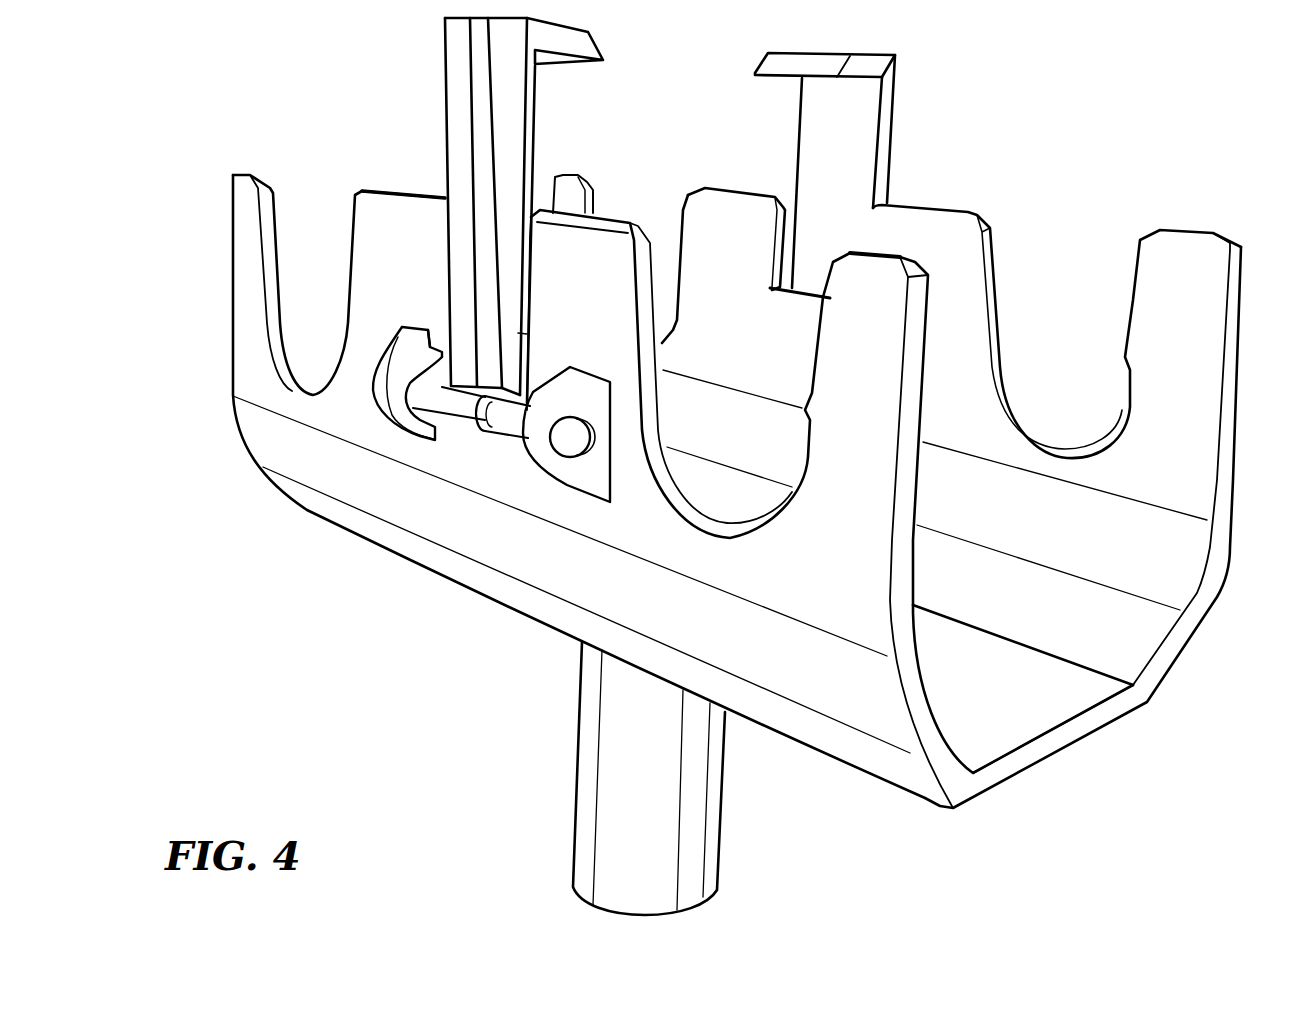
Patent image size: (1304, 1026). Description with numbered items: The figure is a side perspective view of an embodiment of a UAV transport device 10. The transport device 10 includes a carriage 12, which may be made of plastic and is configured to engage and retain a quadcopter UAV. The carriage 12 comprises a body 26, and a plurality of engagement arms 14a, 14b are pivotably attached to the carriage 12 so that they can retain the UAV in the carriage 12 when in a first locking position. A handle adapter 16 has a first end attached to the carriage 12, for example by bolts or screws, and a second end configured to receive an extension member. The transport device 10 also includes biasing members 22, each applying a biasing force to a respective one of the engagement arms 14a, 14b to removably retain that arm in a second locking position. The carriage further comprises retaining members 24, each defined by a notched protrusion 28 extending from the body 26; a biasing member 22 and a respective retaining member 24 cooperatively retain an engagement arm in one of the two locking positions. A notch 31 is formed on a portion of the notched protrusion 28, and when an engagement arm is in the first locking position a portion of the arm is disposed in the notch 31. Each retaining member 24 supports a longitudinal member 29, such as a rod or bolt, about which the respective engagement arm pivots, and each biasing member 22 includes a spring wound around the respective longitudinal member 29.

The transport device 10 is at (247, 673).
The carriage 12 is at (846, 792).
The engagement arm 14a is at (893, 93).
The engagement arm 14b is at (457, 82).
The handle adapter 16 is at (613, 788).
The biasing member 22 is at (500, 465).
The retaining member 24 is at (395, 382).
The body 26 is at (358, 458).
The notched protrusion 28 is at (433, 350).
The longitudinal member 29 is at (534, 380).
The notch 31 is at (442, 333).